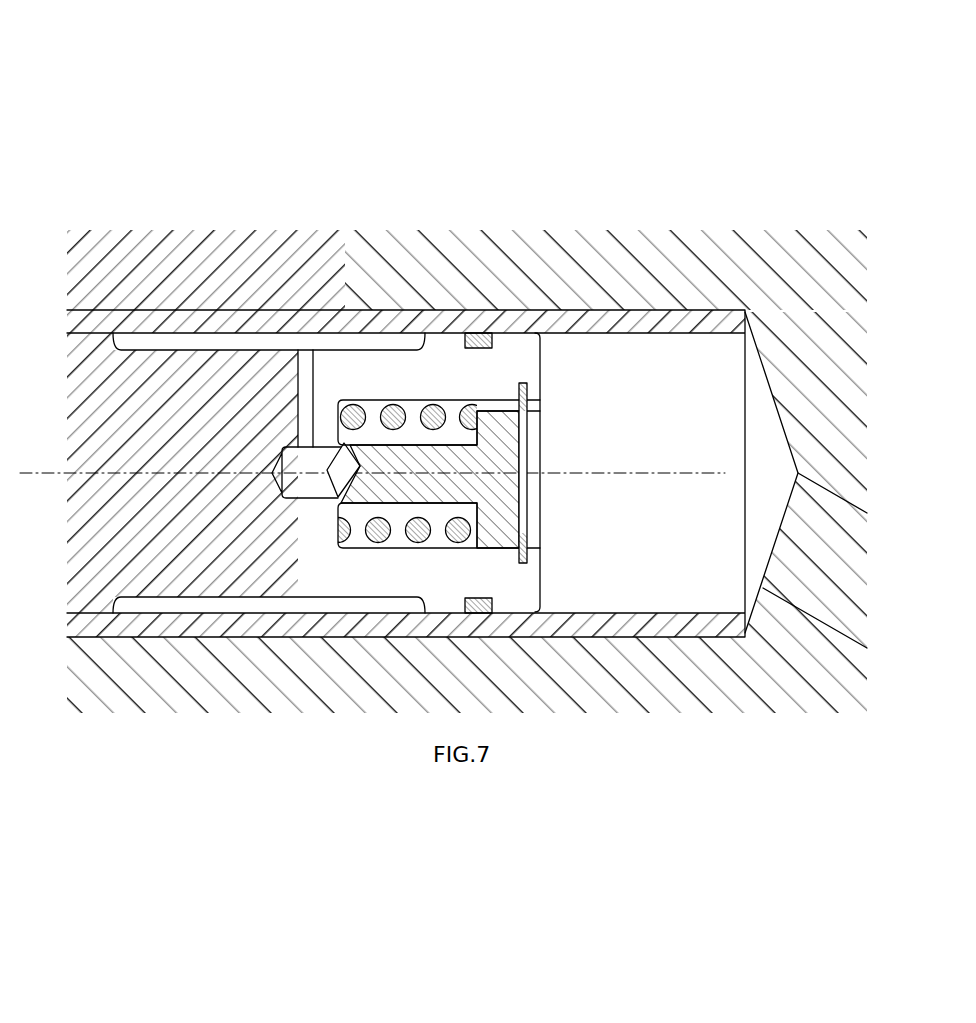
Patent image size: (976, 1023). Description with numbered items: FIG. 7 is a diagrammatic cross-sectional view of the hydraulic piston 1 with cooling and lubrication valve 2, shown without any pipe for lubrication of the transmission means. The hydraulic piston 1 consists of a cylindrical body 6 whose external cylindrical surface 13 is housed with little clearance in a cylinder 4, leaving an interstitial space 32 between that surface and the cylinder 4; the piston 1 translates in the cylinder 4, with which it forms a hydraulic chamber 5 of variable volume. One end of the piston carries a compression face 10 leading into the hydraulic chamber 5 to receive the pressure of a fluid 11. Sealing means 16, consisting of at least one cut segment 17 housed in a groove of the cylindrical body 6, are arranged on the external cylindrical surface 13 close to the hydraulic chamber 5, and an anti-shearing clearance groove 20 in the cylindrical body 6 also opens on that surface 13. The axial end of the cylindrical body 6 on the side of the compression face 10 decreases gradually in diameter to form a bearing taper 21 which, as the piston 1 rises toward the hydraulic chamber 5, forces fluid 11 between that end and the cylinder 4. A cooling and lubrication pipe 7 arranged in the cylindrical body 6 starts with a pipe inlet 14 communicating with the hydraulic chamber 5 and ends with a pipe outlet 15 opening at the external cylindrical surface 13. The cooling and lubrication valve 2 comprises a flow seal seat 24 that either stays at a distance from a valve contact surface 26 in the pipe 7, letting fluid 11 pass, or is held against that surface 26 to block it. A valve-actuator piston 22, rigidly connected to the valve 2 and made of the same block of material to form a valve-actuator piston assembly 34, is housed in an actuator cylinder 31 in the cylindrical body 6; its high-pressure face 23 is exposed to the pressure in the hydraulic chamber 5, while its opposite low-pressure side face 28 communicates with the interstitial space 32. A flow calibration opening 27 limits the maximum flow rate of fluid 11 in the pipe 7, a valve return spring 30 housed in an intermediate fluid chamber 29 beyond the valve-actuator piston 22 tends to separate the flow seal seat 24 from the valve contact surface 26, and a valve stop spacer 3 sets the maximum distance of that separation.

The hydraulic piston 1 is at (97, 393).
The cooling and lubrication valve 2 is at (381, 440).
The valve stop spacer 3 is at (539, 406).
The cylinder 4 is at (674, 333).
The hydraulic chamber 5 is at (700, 407).
The cylindrical body 6 is at (134, 373).
The cooling and lubrication pipe 7 is at (303, 397).
The compression face 10 is at (545, 582).
The fluid 11 is at (757, 345).
The external cylindrical surface 13 is at (85, 613).
The pipe inlet 14 is at (553, 507).
The pipe outlet 15 is at (305, 333).
The sealing means 16 is at (478, 333).
The cut segment 17 is at (487, 333).
The anti-shearing clearance groove 20 is at (158, 597).
The bearing taper 21 is at (531, 334).
The valve-actuator piston 22 is at (505, 485).
The high-pressure face 23 is at (541, 443).
The flow seal seat 24 is at (353, 412).
The valve contact surface 26 is at (337, 497).
The flow calibration opening 27 is at (495, 398).
The low-pressure side face 28 is at (450, 538).
The intermediate fluid chamber 29 is at (398, 540).
The valve return spring 30 is at (380, 537).
The actuator cylinder 31 is at (370, 455).
The interstitial space 32 is at (60, 333).
The valve-actuator piston assembly 34 is at (528, 481).